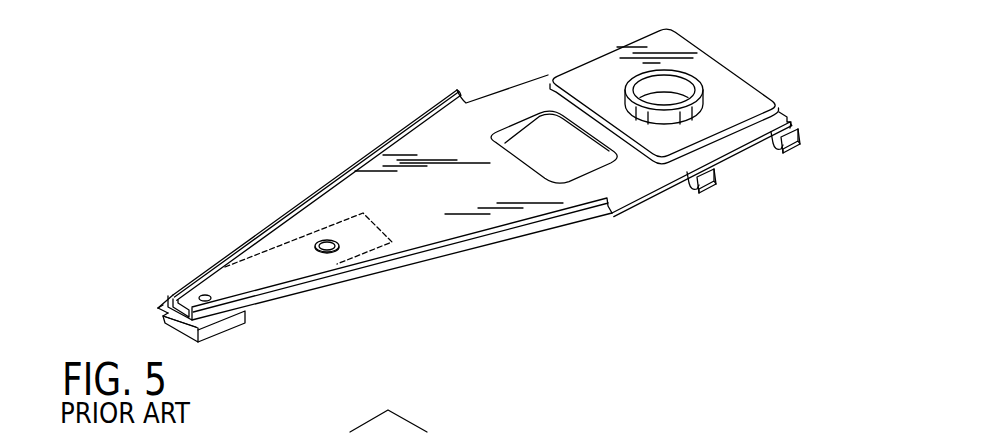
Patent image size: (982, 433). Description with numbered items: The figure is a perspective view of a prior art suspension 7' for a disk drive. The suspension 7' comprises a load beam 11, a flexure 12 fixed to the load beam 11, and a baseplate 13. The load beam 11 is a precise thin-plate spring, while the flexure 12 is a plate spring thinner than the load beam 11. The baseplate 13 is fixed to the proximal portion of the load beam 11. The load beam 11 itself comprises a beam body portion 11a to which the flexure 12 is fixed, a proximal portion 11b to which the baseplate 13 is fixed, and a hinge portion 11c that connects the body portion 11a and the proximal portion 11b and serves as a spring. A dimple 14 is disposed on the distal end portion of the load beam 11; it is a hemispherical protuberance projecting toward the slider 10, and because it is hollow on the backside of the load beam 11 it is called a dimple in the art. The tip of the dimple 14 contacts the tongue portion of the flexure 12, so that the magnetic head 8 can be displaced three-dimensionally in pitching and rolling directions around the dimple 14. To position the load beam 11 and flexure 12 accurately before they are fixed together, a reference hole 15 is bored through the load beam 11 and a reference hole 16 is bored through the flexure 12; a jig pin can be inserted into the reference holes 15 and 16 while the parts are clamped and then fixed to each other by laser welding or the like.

The suspension 7' is at (474, 188).
The magnetic head 8 is at (243, 337).
The slider 10 is at (184, 341).
The load beam 11 is at (349, 193).
The beam body portion 11a is at (435, 237).
The proximal portion 11b is at (732, 153).
The hinge portion 11c is at (623, 192).
The flexure 12 is at (273, 253).
The baseplate 13 is at (591, 77).
The dimple 14 is at (203, 295).
The reference hole 15 is at (320, 241).
The reference hole 16 is at (335, 254).